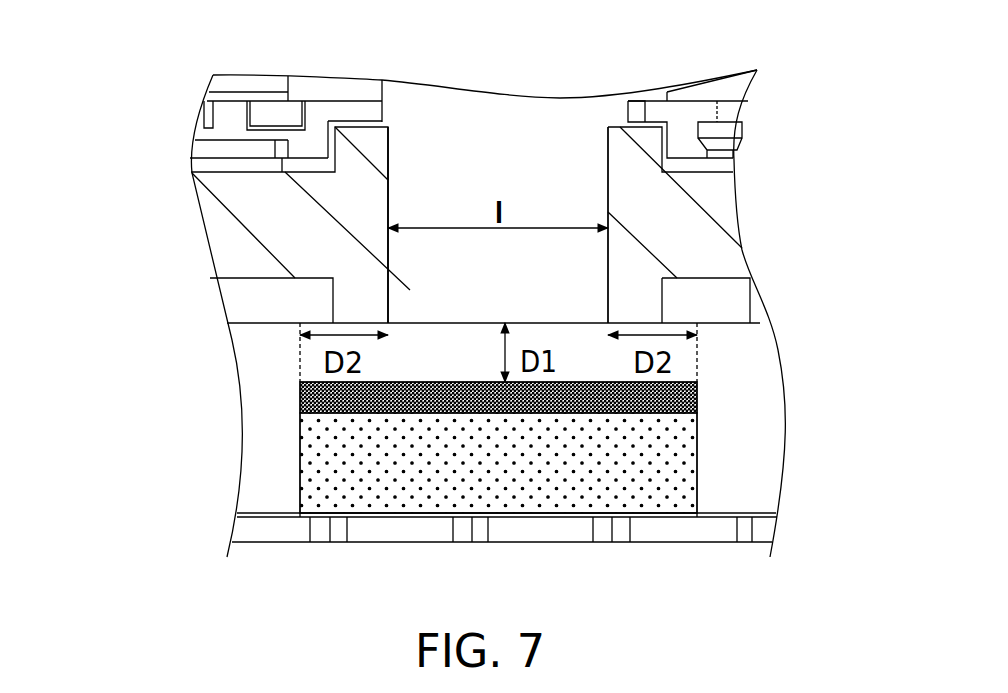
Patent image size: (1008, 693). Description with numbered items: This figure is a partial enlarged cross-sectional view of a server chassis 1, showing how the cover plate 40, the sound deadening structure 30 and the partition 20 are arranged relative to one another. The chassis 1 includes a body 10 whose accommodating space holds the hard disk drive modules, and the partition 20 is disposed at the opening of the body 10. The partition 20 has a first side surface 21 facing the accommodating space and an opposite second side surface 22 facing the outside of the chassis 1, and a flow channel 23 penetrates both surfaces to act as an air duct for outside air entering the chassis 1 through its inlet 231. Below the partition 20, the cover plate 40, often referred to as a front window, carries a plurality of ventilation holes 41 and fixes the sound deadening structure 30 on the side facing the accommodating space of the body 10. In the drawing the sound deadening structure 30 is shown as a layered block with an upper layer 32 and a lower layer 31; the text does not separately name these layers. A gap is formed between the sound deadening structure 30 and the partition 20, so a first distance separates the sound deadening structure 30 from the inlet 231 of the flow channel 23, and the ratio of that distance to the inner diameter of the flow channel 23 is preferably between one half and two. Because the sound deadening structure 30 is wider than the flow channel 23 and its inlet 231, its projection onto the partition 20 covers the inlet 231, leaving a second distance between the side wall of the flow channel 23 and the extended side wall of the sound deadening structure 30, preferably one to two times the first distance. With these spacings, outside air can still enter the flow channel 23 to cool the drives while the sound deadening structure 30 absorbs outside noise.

The chassis 1 is at (170, 53).
The body 10 is at (733, 90).
The partition 20 is at (723, 220).
The first side surface 21 is at (642, 127).
The second side surface 22 is at (640, 323).
The flow channel 23 is at (505, 145).
The inlet 231 is at (388, 275).
The sound deadening structure 30 is at (337, 480).
The light emitting layer 31 is at (327, 442).
The electrode layer 32 is at (320, 408).
The cover plate 40 is at (745, 528).
The ventilation holes 41 is at (398, 530).